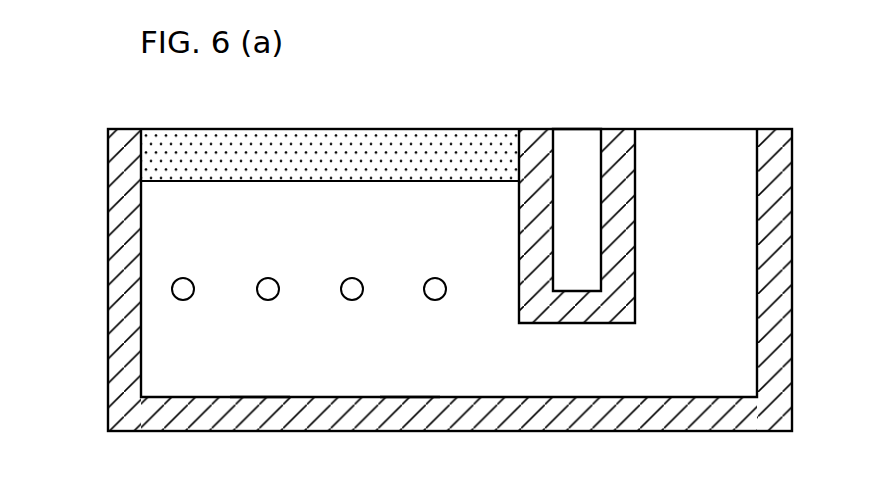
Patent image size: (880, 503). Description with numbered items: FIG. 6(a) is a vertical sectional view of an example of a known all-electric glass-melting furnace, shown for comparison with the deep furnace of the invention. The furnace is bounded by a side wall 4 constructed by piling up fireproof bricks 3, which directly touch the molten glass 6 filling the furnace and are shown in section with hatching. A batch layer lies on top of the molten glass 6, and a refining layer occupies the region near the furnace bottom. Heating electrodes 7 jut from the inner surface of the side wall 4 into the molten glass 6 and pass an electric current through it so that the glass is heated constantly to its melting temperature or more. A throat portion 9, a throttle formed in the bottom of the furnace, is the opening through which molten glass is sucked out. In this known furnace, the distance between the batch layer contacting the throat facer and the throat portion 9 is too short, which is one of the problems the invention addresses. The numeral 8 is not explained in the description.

The fireproof bricks 3 is at (162, 337).
The side wall 4 is at (104, 254).
The molten glass 6 is at (259, 380).
The heating electrodes 7 is at (273, 279).
The upper layer boundary 8 is at (297, 181).
The throat portion 9 is at (582, 385).